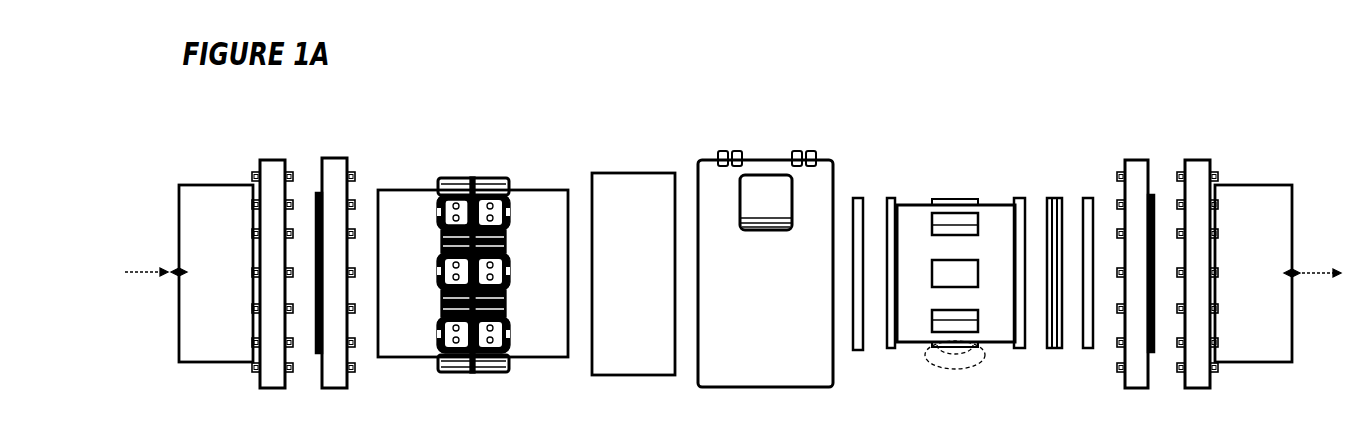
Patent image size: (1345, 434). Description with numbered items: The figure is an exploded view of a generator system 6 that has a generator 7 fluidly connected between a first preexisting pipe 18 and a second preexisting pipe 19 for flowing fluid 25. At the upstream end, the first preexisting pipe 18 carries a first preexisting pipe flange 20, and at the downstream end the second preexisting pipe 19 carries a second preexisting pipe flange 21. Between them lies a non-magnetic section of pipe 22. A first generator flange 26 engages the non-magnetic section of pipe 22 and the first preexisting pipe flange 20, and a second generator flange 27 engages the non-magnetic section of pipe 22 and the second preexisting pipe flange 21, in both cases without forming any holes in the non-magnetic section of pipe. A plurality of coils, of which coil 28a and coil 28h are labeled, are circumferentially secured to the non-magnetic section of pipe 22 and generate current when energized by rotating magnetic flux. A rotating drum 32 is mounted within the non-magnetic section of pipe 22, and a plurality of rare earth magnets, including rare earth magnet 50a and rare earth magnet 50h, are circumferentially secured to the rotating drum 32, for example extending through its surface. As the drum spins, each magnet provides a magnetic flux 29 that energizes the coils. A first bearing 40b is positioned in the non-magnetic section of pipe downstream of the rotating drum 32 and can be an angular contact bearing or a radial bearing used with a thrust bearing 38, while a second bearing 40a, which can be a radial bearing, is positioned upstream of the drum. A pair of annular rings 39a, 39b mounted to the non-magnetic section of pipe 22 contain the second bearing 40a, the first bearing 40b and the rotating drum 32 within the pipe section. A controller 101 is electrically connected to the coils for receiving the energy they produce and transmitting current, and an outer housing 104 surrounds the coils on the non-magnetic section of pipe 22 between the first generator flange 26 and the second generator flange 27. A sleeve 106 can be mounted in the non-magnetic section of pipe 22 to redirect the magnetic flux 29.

The generator system 6 is at (168, 137).
The generator 7 is at (1050, 115).
The first preexisting pipe 18 is at (224, 185).
The second preexisting pipe 19 is at (1258, 180).
The first preexisting pipe flange 20 is at (270, 160).
The second preexisting pipe flange 21 is at (1198, 160).
The non-magnetic section of pipe 22 is at (548, 190).
The fluid 25 is at (146, 272).
The first generator flange 26 is at (340, 158).
The second generator flange 27 is at (1136, 160).
The coil 28a is at (488, 178).
The coil 28h is at (437, 200).
The magnetic flux 29 is at (945, 369).
The rotating drum 32 is at (914, 343).
The thrust bearing 38 is at (1062, 192).
The annular ring 39a is at (858, 198).
The annular ring 39b is at (1092, 192).
The second bearing 40a is at (890, 198).
The first bearing 40b is at (1026, 192).
The rare earth magnet 50a is at (962, 192).
The rare earth magnet 50h is at (932, 220).
The controller 101 is at (758, 175).
The outer housing 104 is at (780, 160).
The sleeve 106 is at (640, 173).